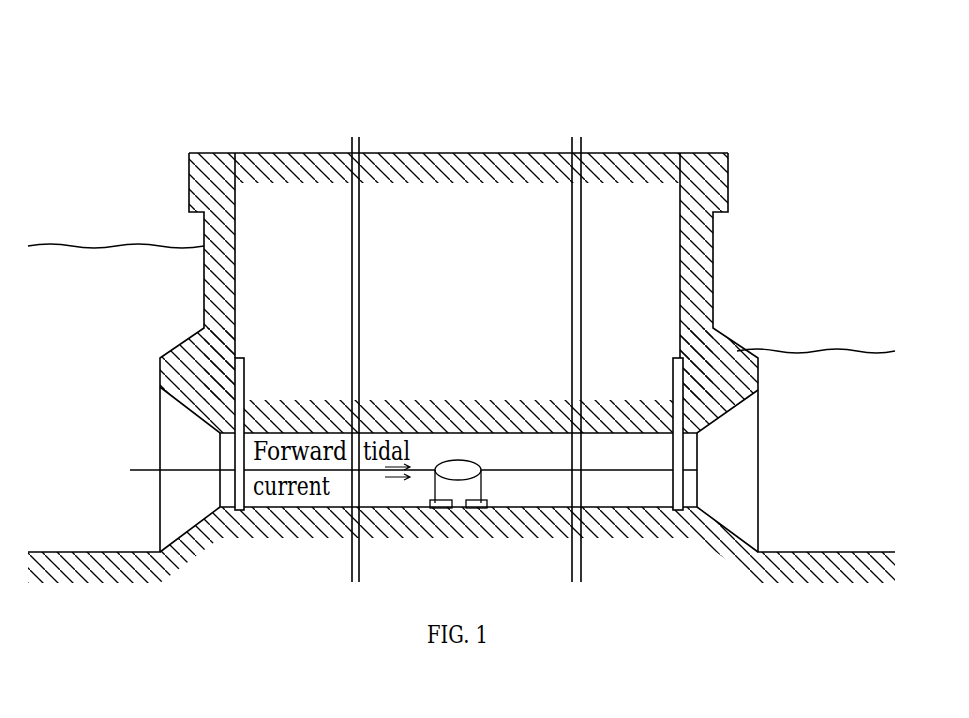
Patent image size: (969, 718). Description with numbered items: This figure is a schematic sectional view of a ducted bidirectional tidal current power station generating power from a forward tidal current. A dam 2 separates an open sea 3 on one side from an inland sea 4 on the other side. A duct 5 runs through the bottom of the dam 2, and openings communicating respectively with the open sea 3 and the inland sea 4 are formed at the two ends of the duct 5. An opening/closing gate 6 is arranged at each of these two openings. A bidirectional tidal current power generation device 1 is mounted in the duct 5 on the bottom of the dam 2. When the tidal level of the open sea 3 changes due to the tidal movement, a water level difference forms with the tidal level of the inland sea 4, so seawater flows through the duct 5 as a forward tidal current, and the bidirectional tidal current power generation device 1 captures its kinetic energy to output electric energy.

The bidirectional tidal current power generation device 1 is at (458, 500).
The dam 2 is at (330, 177).
The open sea 3 is at (80, 293).
The inland sea 4 is at (847, 397).
The duct 5 is at (550, 457).
The opening/closing gate 6 is at (238, 352).